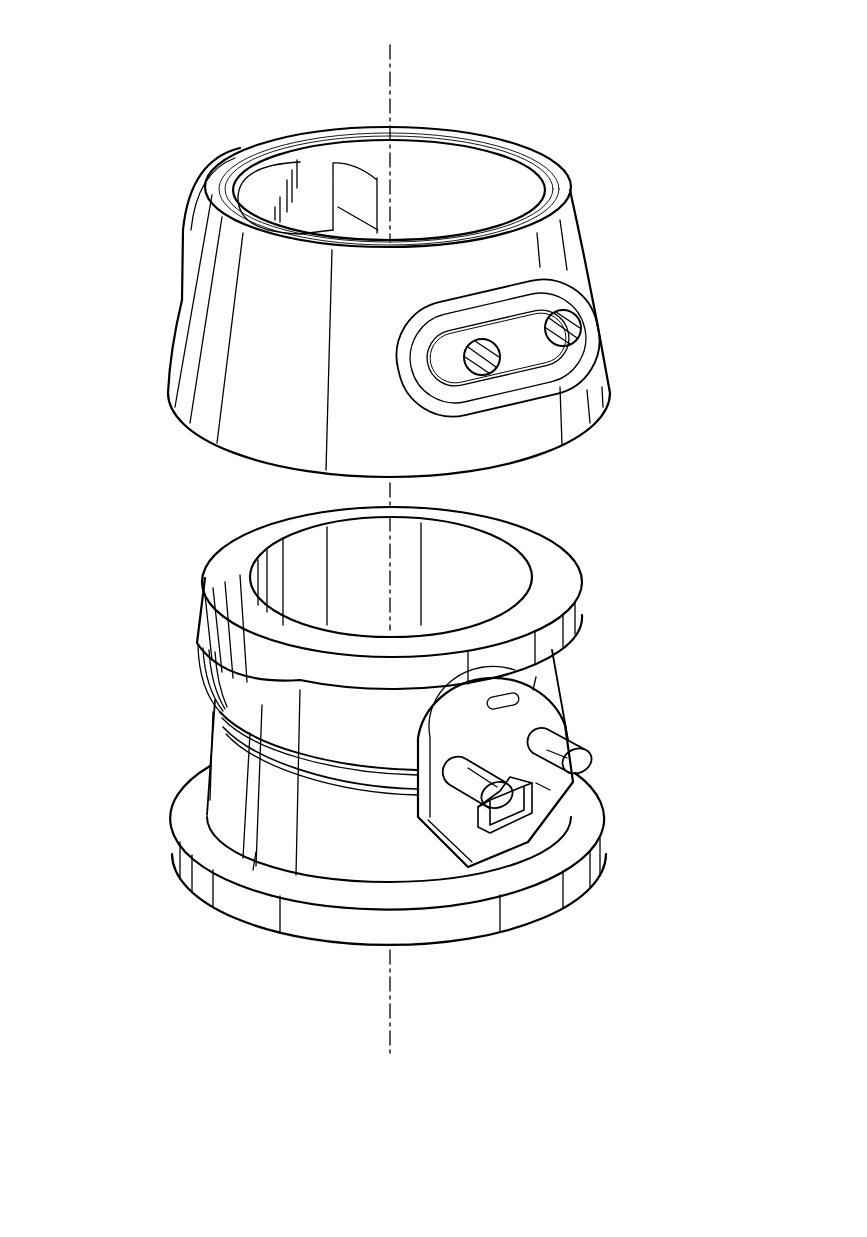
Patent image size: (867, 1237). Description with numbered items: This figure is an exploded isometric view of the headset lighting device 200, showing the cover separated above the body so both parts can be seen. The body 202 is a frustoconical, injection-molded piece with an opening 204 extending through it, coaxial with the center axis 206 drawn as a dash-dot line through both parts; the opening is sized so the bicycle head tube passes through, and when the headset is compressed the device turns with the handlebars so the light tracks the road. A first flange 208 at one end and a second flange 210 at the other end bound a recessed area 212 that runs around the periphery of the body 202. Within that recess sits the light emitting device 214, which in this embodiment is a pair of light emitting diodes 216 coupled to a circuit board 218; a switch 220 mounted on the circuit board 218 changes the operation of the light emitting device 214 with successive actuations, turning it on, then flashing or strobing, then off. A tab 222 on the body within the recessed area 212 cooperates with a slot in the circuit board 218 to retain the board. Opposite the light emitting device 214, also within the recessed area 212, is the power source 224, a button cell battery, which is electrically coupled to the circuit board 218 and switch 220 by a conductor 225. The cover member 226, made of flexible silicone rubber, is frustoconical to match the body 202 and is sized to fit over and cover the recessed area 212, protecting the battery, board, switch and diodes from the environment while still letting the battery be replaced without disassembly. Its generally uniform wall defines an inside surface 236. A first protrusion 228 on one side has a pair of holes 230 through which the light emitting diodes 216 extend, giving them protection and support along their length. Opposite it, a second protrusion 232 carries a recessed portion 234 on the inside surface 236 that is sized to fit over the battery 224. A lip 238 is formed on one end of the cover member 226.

The lighting device 200 is at (157, 128).
The body 202 is at (575, 600).
The opening 204 is at (475, 566).
The center axis 206 is at (393, 70).
The first flange 208 is at (205, 592).
The second flange 210 is at (178, 851).
The recessed area 212 is at (233, 772).
The light emitting device 214 is at (592, 712).
The light emitting diodes 216 is at (557, 757).
The circuit board 218 is at (547, 786).
The switch 220 is at (524, 820).
The tab 222 is at (510, 700).
The power source 224 is at (200, 656).
The conductor 225 is at (257, 850).
The cover member 226 is at (568, 226).
The first protrusion 228 is at (581, 296).
The holes 230 is at (576, 334).
The second protrusion 232 is at (192, 223).
The recessed portion 234 is at (323, 197).
The inside surface 236 is at (505, 180).
The lip 238 is at (548, 178).